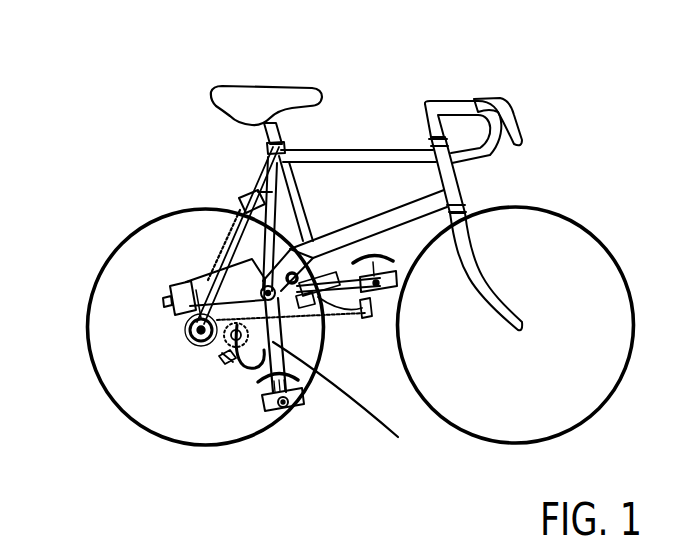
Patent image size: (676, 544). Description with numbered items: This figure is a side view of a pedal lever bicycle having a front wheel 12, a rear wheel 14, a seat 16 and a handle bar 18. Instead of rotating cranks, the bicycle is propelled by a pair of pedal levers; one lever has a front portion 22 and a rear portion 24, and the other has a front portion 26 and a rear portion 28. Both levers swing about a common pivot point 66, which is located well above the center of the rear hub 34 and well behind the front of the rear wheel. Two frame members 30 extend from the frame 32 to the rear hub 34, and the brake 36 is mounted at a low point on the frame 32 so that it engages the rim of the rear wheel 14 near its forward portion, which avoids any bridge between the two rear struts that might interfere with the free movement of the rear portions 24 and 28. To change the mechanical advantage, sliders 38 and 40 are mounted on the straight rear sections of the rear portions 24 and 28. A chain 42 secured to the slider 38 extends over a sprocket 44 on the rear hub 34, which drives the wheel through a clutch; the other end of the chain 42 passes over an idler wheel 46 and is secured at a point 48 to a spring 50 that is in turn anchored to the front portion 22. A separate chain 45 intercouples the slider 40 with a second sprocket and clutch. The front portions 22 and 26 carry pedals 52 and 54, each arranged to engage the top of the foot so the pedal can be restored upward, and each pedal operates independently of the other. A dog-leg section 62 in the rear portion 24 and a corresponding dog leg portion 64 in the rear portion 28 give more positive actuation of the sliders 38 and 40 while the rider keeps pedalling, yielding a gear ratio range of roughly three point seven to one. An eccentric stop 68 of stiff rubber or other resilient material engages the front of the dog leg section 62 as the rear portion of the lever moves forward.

The front wheel 12 is at (606, 236).
The rear wheel 14 is at (93, 272).
The seat 16 is at (288, 102).
The handle bar 18 is at (473, 152).
The front portion 22 is at (290, 323).
The rear portion 24 is at (290, 178).
The front portion 26 is at (372, 292).
The rear portion 28 is at (192, 283).
The frame members 30 is at (233, 212).
The frame 32 is at (364, 151).
The rear hub 34 is at (215, 335).
The brake 36 is at (322, 274).
The slider 38 is at (228, 212).
The slider 40 is at (170, 287).
The chain 42 is at (243, 192).
The sprocket 44 is at (200, 335).
The chain 45 is at (347, 395).
The idler wheel 46 is at (205, 340).
The point 48 is at (225, 358).
The spring 50 is at (238, 367).
The pedal 52 is at (293, 404).
The pedal 54 is at (382, 276).
The dog-leg section 62 is at (294, 246).
The dog leg portion 64 is at (275, 245).
The pivot point 66 is at (290, 320).
The eccentric stop 68 is at (320, 283).